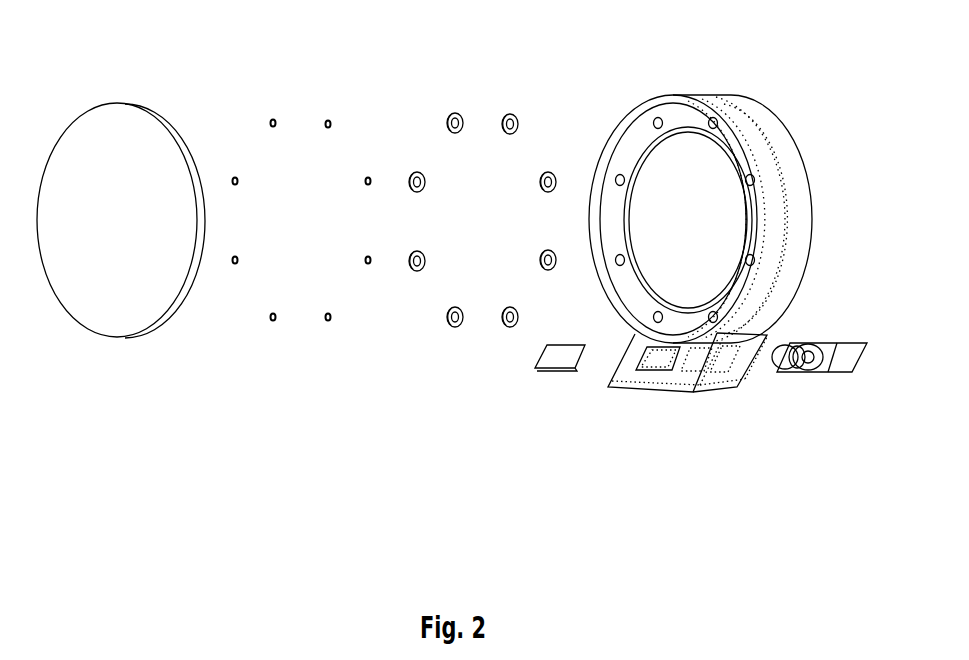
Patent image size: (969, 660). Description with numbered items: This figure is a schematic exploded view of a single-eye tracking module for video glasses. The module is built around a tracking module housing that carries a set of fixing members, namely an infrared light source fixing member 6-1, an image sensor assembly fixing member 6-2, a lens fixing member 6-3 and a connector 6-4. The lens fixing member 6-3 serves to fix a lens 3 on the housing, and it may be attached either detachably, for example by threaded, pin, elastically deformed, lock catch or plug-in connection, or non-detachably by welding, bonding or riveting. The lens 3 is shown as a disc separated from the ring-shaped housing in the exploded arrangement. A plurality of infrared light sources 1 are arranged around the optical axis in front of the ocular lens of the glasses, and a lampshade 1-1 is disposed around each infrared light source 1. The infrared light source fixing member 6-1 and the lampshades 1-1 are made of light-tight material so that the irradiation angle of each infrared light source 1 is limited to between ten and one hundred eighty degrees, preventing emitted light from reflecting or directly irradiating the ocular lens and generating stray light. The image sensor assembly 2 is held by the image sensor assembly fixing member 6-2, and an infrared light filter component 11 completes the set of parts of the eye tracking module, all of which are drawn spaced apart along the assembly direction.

The infrared light source 1 is at (272, 119).
The lampshade 1-1 is at (452, 113).
The image sensor assembly 2 is at (838, 363).
The lens 3 is at (138, 310).
The infrared light source fixing member 6-1 is at (670, 123).
The image sensor assembly fixing member 6-2 is at (728, 375).
The lens fixing member 6-3 is at (608, 143).
The connector 6-4 is at (796, 152).
The infrared light filter component 11 is at (563, 360).